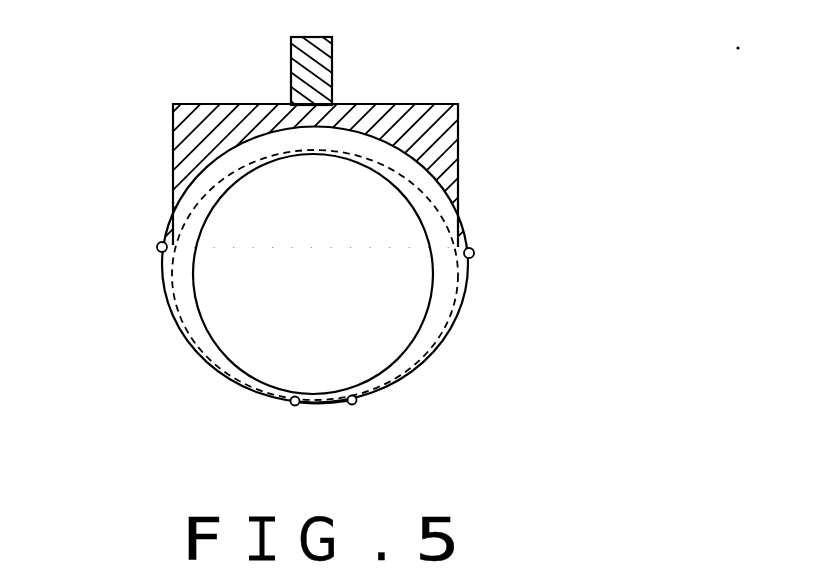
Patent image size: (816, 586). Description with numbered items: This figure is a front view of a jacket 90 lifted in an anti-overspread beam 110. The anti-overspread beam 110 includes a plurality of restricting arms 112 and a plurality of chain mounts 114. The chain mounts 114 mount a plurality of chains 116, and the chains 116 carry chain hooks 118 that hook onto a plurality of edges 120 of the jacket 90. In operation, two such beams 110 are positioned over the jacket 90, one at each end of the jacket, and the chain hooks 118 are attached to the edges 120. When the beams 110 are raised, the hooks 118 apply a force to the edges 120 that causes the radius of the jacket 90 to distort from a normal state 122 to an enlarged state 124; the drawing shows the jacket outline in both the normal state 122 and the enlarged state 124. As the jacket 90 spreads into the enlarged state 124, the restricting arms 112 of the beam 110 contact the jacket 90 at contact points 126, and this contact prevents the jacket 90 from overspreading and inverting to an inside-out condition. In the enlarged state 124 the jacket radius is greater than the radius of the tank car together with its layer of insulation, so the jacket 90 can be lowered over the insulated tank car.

The jacket 90 is at (567, 320).
The anti-overspread beam 110 is at (625, 187).
The restricting arms 112 is at (172, 185).
The chain mounts 114 is at (474, 253).
The chains 116 is at (457, 322).
The chain hooks 118 is at (299, 405).
The edges 120 is at (295, 396).
The normal state 122 is at (428, 317).
The enlarged state 124 is at (452, 298).
The contact points 126 is at (503, 289).